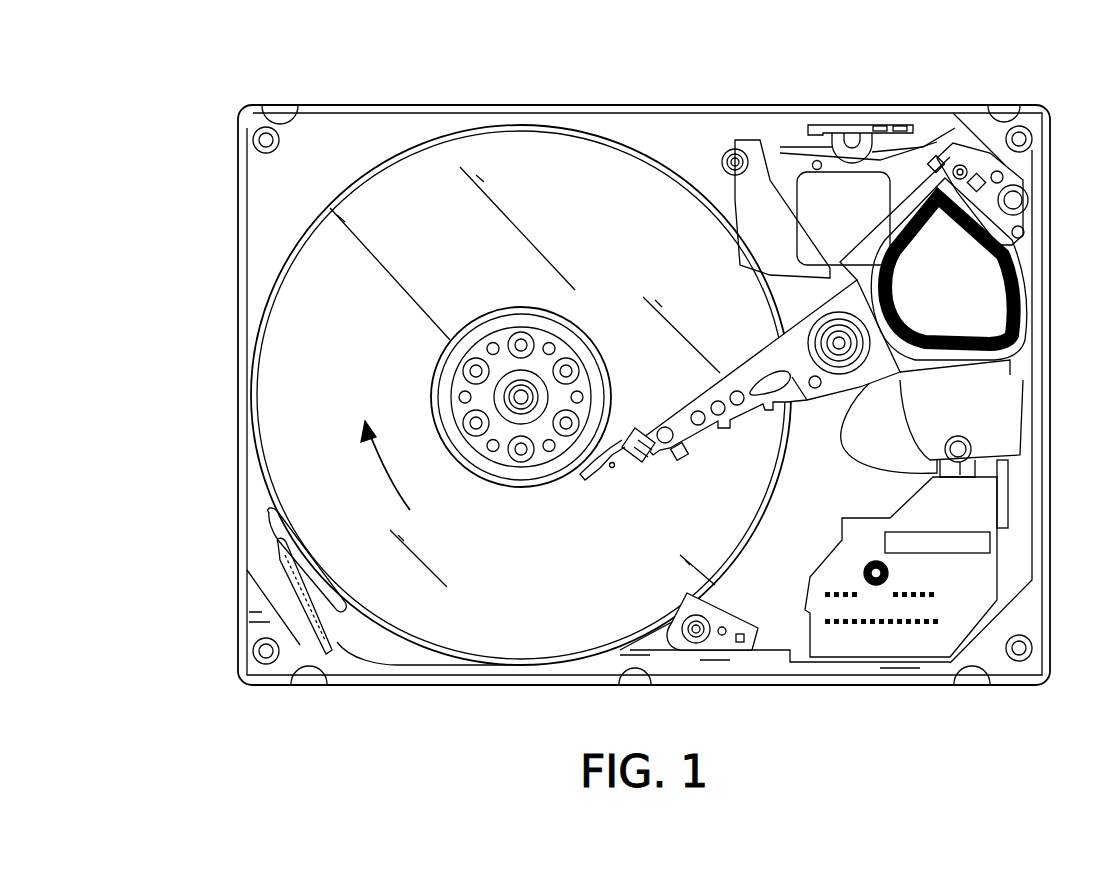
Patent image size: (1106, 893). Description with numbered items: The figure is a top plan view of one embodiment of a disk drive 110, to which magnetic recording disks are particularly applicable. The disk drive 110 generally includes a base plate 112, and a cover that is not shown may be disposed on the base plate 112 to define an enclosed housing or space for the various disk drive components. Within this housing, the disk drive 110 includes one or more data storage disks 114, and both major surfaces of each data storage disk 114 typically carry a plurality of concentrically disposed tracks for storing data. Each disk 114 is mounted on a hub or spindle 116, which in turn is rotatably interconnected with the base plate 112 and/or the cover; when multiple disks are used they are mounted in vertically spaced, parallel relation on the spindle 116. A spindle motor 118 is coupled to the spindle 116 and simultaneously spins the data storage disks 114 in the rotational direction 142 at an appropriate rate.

The disk drive 110 is at (184, 188).
The base plate 112 is at (370, 105).
The data storage disk 114 is at (588, 165).
The spindle 116 is at (582, 345).
The spindle motor 118 is at (498, 378).
The rotational direction 142 is at (383, 470).